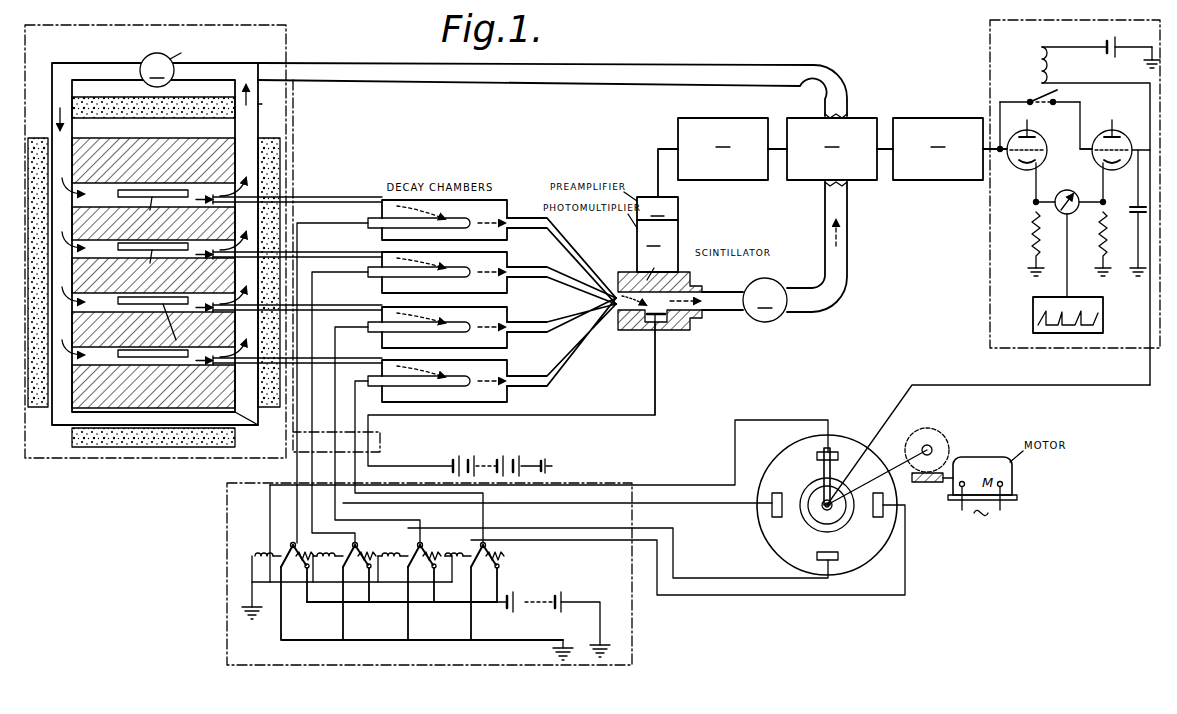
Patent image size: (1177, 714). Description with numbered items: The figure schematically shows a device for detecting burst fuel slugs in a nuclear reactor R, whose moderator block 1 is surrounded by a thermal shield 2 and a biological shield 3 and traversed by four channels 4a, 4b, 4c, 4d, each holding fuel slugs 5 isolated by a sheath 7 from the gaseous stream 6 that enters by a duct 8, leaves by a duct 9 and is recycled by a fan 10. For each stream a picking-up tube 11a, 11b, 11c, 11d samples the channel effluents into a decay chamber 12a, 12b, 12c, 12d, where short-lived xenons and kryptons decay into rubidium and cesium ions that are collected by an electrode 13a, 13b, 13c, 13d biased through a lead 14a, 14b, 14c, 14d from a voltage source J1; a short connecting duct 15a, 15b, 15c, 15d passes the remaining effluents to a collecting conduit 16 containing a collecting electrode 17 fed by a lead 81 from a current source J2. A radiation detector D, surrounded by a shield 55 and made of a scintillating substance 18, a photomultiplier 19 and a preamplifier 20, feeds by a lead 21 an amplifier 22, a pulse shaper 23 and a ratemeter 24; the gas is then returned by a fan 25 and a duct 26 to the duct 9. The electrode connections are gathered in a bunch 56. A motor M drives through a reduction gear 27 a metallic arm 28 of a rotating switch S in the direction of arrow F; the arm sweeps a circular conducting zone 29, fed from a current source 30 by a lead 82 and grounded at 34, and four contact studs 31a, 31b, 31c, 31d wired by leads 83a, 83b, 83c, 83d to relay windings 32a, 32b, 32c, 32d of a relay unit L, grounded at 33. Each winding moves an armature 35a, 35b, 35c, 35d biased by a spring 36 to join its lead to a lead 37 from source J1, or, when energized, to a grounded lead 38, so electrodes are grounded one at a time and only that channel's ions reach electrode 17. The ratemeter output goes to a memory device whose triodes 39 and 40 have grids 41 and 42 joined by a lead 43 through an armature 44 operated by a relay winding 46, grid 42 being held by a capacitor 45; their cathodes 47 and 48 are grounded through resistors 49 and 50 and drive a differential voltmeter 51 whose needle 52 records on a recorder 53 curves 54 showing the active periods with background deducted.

The moderator block 1 is at (213, 400).
The thermal shield 2 is at (257, 424).
The biological shield 3 is at (230, 109).
The channel 4a is at (236, 170).
The channel 4b is at (237, 228).
The channel 4c is at (236, 283).
The channel 4d is at (237, 337).
The slug of fissionable fuel material 5 is at (118, 194).
The gaseous stream 6 is at (68, 185).
The sheath 7 is at (160, 268).
The duct 8 is at (52, 77).
The duct 9 is at (265, 104).
The fan 10 is at (173, 65).
The picking-up tube 11a is at (309, 196).
The picking-up tube 11b is at (311, 252).
The picking-up tube 11c is at (325, 306).
The picking-up tube 11d is at (343, 360).
The decay chamber 12a is at (500, 199).
The decay chamber 12b is at (508, 262).
The decay chamber 12c is at (508, 318).
The decay chamber 12d is at (508, 372).
The electrode 13a is at (436, 216).
The electrode 13b is at (436, 265).
The electrode 13c is at (436, 320).
The electrode 13d is at (436, 374).
The lead 14a is at (297, 496).
The lead 14b is at (312, 522).
The lead 14c is at (422, 520).
The lead 14d is at (483, 512).
The connecting duct 15a is at (574, 245).
The connecting duct 15b is at (576, 280).
The connecting duct 15c is at (556, 322).
The connecting duct 15d is at (573, 342).
The collecting conduit 16 is at (661, 296).
The collecting electrode 17 is at (667, 325).
The scintillating substance 18 is at (654, 267).
The photomultiplier 19 is at (657, 246).
The preamplifier 20 is at (657, 208).
The lead 21 is at (658, 149).
The amplifier 22 is at (723, 149).
The pulse shaper 23 is at (832, 149).
The ratemeter 24 is at (938, 149).
The fan 25 is at (765, 311).
The duct 26 is at (724, 291).
The reduction gear 27 is at (947, 456).
The metallic arm 28 is at (823, 452).
The circular conducting zone 29 is at (841, 524).
The current source 30 is at (1116, 44).
The contact stud 31a is at (817, 458).
The contact stud 31b is at (777, 520).
The contact stud 31c is at (827, 552).
The contact stud 31d is at (877, 520).
The relay winding 32a is at (258, 553).
The relay winding 32b is at (344, 559).
The relay winding 32c is at (409, 559).
The relay winding 32d is at (474, 556).
The ground 33 is at (252, 602).
The ground 34 is at (1146, 60).
The armature 35a is at (291, 545).
The armature 35b is at (358, 543).
The armature 35c is at (428, 539).
The armature 35d is at (493, 556).
The spring 36 is at (500, 538).
The lead 37 is at (497, 604).
The lead 38 is at (282, 632).
The triode 39 is at (1010, 160).
The triode 40 is at (1122, 134).
The grid 41 is at (1038, 148).
The grid 42 is at (1097, 153).
The lead 43 is at (1082, 104).
The armature 44 is at (1030, 97).
The capacitor 45 is at (1136, 222).
The relay winding 46 is at (1038, 51).
The cathode 47 is at (1034, 185).
The cathode 48 is at (1104, 180).
The resistor 49 is at (1031, 242).
The resistor 50 is at (1108, 248).
The differential voltmeter 51 is at (1059, 211).
The needle 52 is at (1075, 211).
The recorder 53 is at (1105, 326).
The curve 54 is at (1040, 319).
The shield 55 is at (625, 331).
The bunch 56 is at (383, 441).
The lead 81 is at (657, 394).
The lead 82 is at (1090, 386).
The lead 83a is at (704, 485).
The lead 83b is at (714, 506).
The lead 83c is at (703, 578).
The lead 83d is at (699, 595).
The nuclear reactor R is at (162, 459).
The motor / memory device M is at (990, 27).
The radiation detector D is at (680, 248).
The rotating switch S is at (849, 440).
The arrow F is at (813, 470).
The voltage source J1 is at (512, 600).
The current source J2 is at (471, 458).
The relay unit L is at (227, 576).